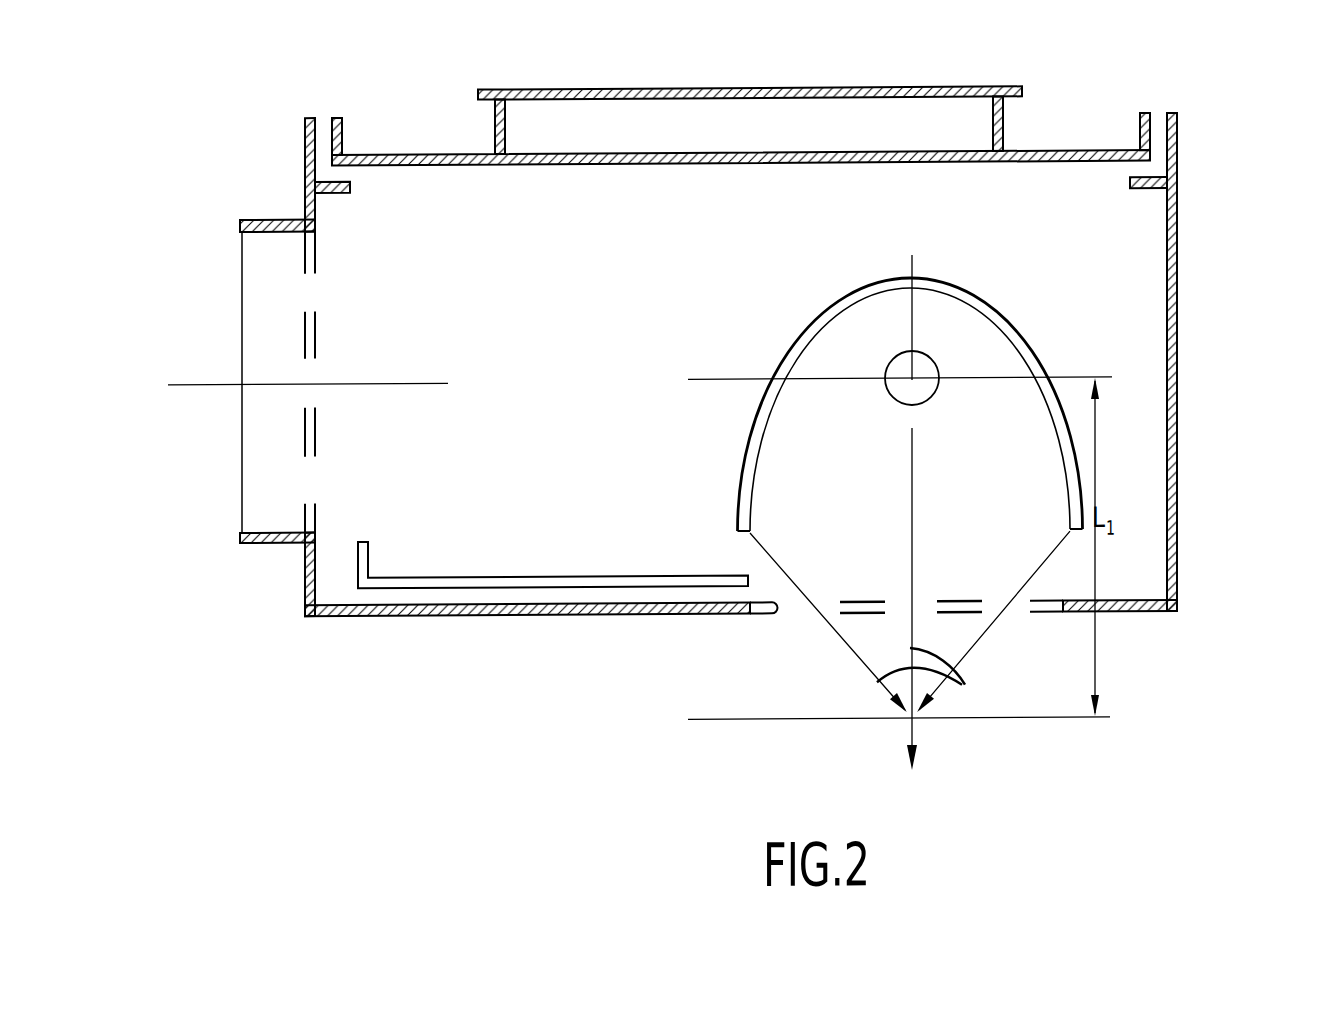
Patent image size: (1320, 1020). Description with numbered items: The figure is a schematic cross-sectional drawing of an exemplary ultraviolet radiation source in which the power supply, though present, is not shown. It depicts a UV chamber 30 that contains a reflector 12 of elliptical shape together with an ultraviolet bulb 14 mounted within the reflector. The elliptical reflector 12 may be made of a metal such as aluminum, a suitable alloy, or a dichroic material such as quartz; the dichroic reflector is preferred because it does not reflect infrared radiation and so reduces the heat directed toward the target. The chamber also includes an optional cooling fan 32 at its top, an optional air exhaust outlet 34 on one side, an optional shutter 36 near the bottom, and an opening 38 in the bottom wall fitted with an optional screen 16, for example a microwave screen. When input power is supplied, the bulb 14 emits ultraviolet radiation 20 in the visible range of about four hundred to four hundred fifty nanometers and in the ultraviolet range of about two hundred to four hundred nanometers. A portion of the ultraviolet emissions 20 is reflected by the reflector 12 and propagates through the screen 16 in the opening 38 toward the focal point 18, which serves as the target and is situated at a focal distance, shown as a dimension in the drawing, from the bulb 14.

The reflector 12 is at (1011, 328).
The ultraviolet bulb 14 is at (925, 367).
The screen 16 is at (762, 614).
The focal point 18 is at (940, 733).
The ultraviolet radiation 20 is at (972, 650).
The UV chamber 30 is at (1214, 148).
The cooling fan 32 is at (878, 117).
The air exhaust outlet 34 is at (270, 314).
The shutter 36 is at (497, 580).
The opening 38 is at (772, 614).